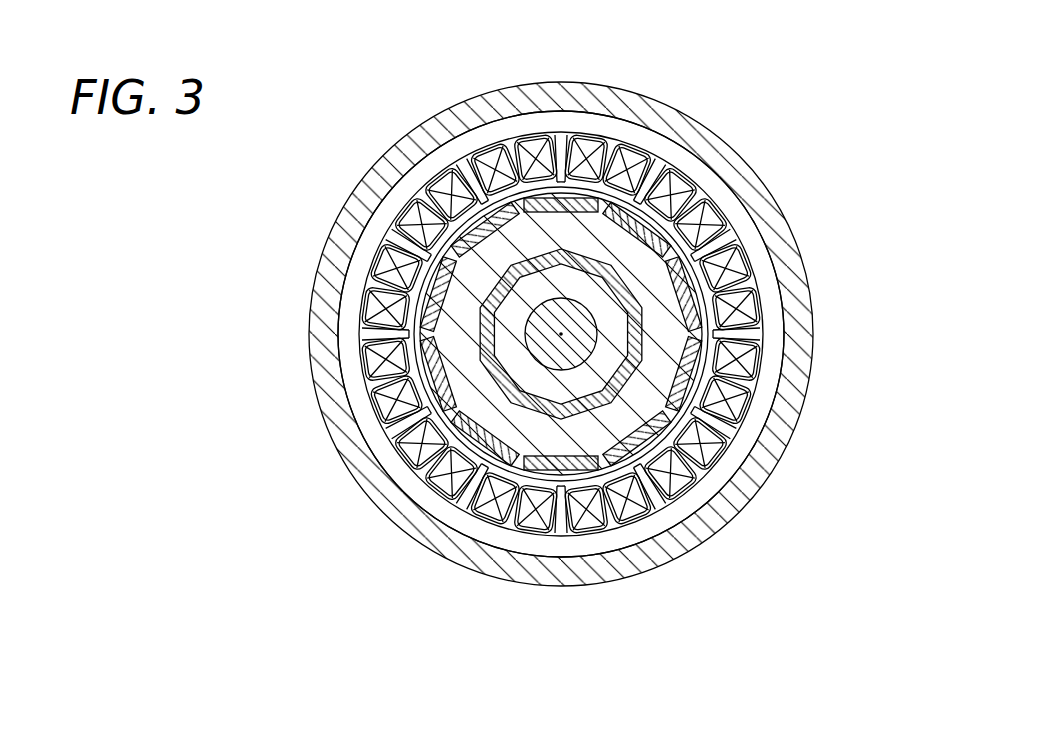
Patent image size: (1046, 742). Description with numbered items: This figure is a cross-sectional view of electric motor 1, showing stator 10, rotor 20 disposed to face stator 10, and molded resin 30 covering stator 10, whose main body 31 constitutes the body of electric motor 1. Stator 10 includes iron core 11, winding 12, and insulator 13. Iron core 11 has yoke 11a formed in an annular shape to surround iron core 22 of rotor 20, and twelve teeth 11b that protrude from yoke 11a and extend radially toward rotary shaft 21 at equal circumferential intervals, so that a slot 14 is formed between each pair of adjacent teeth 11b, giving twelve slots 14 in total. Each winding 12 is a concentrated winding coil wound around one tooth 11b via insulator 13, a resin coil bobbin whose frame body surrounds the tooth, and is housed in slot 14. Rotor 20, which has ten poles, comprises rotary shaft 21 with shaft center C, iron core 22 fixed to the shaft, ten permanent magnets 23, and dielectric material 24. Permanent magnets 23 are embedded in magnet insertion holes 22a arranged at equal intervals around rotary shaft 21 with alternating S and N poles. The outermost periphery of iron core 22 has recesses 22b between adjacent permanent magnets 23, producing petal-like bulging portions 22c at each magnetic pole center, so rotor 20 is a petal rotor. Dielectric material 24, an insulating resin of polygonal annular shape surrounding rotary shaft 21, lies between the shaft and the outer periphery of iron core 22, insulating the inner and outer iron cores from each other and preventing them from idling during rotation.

The electric motor 1 is at (859, 120).
The stator 10 is at (720, 652).
The iron core 11 is at (753, 606).
The yoke 11a is at (650, 523).
The teeth 11b is at (690, 505).
The winding 12 is at (625, 532).
The insulator 13 is at (600, 532).
The slot 14 is at (556, 537).
The rotor 20 is at (247, 148).
The rotary shaft 21 is at (490, 289).
The iron core 22 is at (436, 312).
The magnet insertion holes 22a is at (450, 470).
The recesses 22b is at (640, 226).
The bulging portions 22c is at (603, 208).
The permanent magnets 23 is at (480, 262).
The dielectric material 24 is at (463, 222).
The molded resin 30 is at (452, 122).
The main body 31 is at (452, 122).